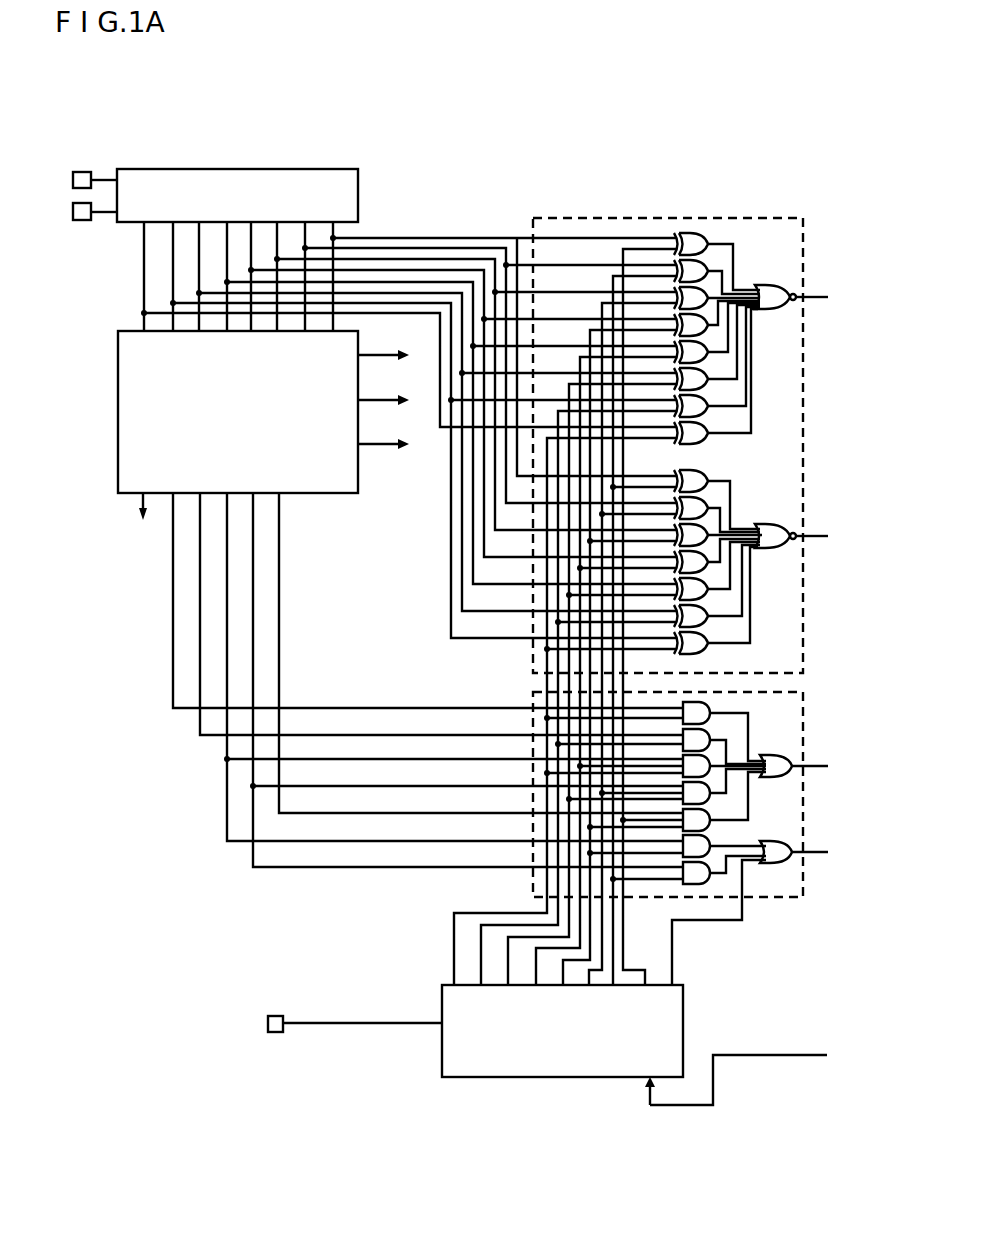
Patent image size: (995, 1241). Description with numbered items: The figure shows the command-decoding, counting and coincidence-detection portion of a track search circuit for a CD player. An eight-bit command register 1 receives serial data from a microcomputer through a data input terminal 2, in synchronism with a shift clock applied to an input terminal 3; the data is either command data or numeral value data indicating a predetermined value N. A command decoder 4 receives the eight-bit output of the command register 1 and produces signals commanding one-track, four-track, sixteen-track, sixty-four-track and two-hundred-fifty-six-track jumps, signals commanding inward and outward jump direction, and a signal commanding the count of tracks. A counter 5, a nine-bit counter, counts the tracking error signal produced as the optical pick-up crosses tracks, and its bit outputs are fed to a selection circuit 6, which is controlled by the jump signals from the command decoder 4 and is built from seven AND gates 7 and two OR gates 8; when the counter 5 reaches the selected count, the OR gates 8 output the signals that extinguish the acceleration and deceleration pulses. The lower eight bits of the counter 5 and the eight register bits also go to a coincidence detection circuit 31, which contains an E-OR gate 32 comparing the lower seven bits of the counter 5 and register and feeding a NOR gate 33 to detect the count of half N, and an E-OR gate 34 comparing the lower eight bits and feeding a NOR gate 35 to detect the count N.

The command register 1 is at (333, 169).
The data input terminal 2 is at (84, 172).
The input terminal 3 is at (82, 220).
The command decoder 4 is at (118, 400).
The counter 5 is at (510, 1077).
The selection circuit 6 is at (763, 886).
The AND gates 7 is at (700, 884).
The OR gates 8 is at (779, 755).
The coincidence detection circuit 31 is at (562, 217).
The E-OR gate 32 is at (700, 470).
The NOR gate 33 is at (781, 549).
The E-OR gate 34 is at (697, 232).
The NOR gate 35 is at (778, 310).